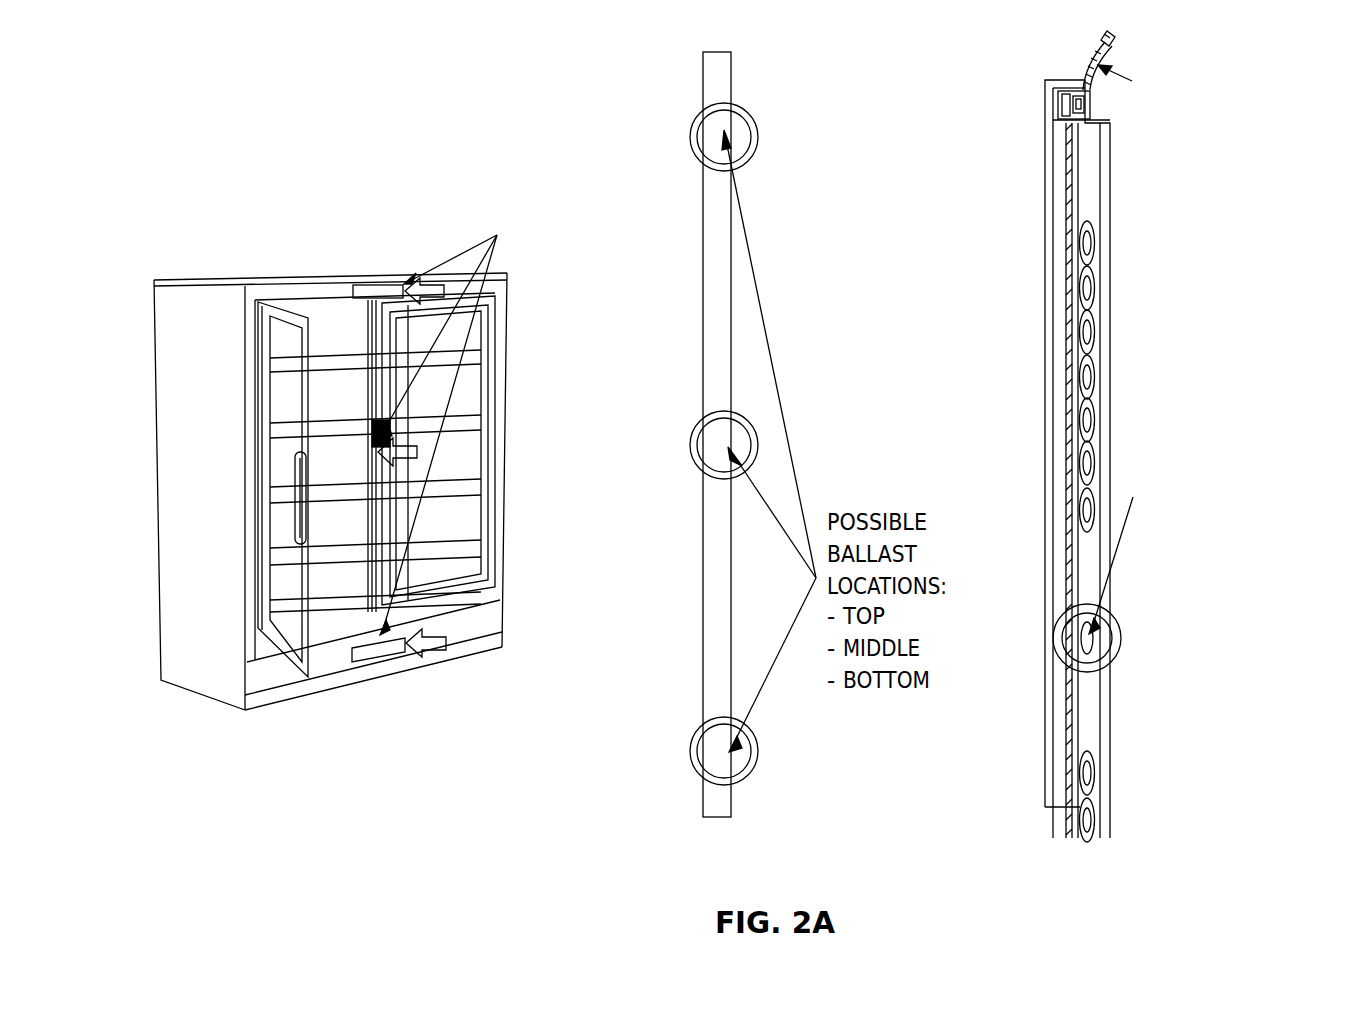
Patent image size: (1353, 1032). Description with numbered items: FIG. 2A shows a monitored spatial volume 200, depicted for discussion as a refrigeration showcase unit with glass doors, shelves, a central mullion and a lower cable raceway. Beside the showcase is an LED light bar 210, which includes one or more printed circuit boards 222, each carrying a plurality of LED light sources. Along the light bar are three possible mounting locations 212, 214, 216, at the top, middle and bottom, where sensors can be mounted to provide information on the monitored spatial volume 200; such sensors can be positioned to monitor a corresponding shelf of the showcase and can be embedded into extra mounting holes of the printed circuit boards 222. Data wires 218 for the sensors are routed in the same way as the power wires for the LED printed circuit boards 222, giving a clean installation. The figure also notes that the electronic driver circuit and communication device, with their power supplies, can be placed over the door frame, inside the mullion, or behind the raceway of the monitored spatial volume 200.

The monitored spatial volume 200 is at (222, 277).
The LED light bar 210 is at (1112, 282).
The location 212 is at (757, 152).
The location 214 is at (694, 444).
The location 216 is at (756, 777).
The data wires 218 is at (1083, 73).
The printed circuit boards 222 is at (1097, 425).